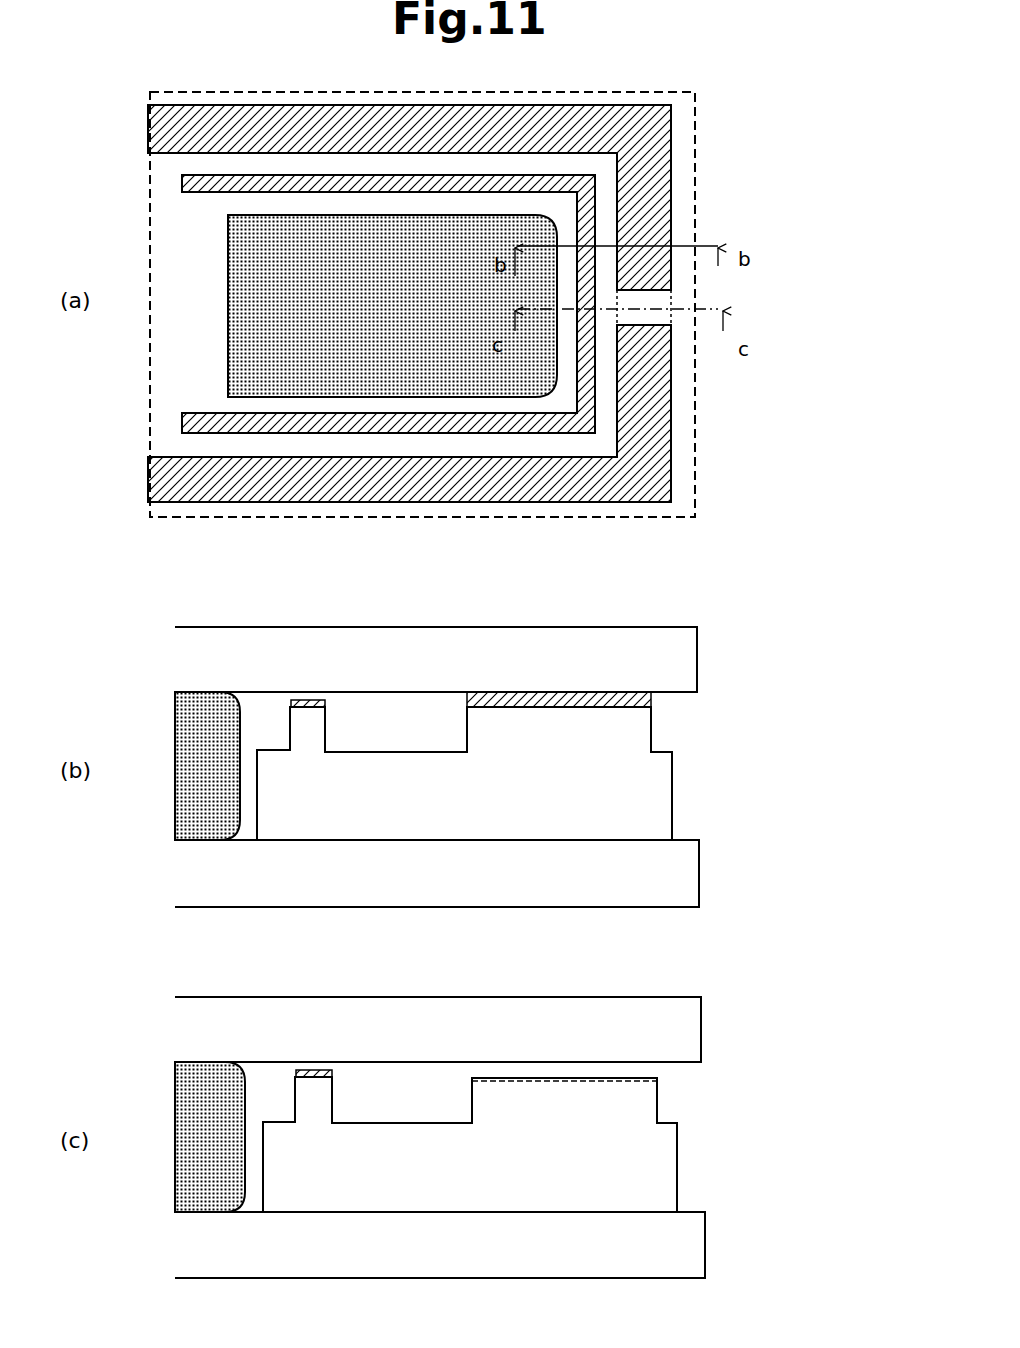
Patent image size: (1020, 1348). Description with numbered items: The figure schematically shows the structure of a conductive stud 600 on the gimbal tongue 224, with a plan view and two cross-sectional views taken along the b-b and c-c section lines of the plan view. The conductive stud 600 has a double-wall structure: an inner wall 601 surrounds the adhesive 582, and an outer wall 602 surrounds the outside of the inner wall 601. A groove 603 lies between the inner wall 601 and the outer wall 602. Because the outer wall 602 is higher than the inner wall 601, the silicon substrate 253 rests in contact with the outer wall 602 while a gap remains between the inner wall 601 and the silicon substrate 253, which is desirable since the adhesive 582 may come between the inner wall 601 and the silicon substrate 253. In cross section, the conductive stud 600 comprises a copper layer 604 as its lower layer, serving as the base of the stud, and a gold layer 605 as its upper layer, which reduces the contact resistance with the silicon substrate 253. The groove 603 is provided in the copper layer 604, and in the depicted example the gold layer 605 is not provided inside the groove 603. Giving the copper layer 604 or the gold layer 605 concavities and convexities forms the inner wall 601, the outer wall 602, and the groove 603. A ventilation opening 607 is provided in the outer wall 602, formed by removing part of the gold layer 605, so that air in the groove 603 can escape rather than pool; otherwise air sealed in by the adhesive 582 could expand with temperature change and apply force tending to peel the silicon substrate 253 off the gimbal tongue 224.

The conductive stud 600 is at (751, 134).
The inner wall 601 is at (513, 440).
The outer wall 602 is at (673, 205).
The groove 603 is at (570, 450).
The copper layer 604 is at (673, 798).
The gold layer 605 is at (305, 698).
The ventilation opening 607 is at (635, 290).
The adhesive 582 is at (325, 398).
The silicon substrate 253 is at (640, 627).
The gimbal tongue 224 is at (705, 1242).